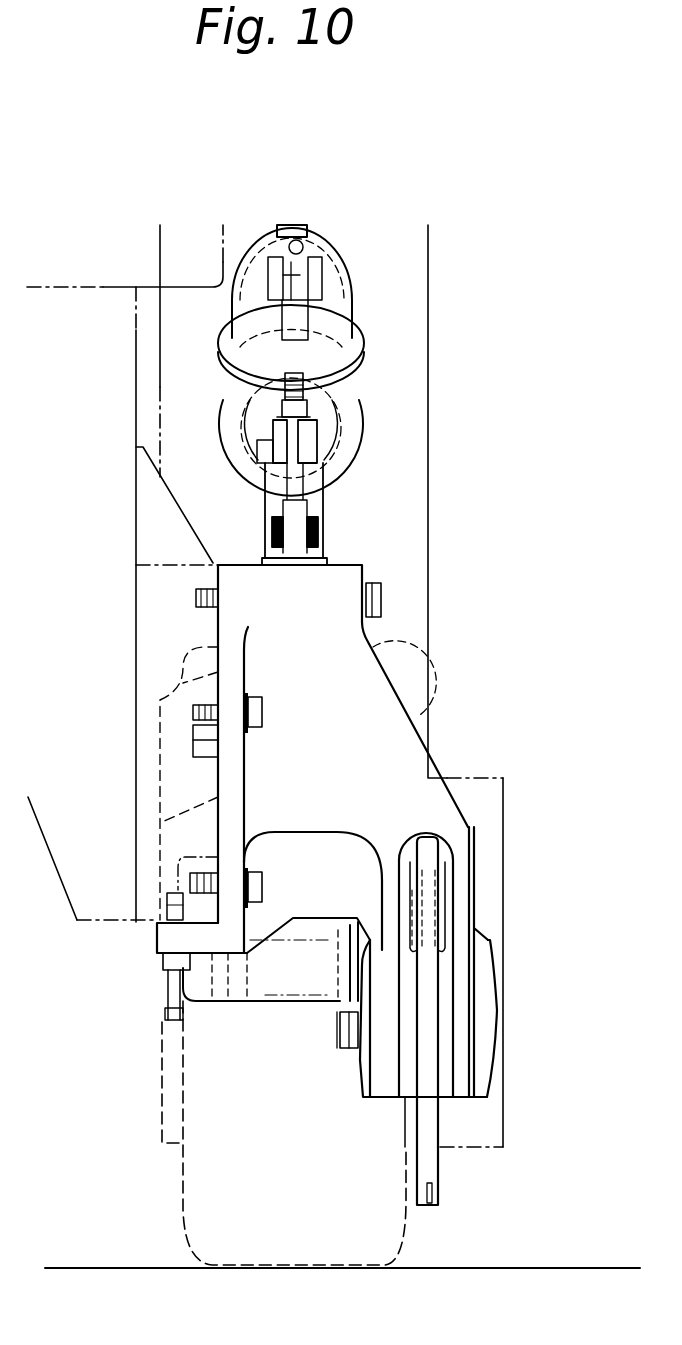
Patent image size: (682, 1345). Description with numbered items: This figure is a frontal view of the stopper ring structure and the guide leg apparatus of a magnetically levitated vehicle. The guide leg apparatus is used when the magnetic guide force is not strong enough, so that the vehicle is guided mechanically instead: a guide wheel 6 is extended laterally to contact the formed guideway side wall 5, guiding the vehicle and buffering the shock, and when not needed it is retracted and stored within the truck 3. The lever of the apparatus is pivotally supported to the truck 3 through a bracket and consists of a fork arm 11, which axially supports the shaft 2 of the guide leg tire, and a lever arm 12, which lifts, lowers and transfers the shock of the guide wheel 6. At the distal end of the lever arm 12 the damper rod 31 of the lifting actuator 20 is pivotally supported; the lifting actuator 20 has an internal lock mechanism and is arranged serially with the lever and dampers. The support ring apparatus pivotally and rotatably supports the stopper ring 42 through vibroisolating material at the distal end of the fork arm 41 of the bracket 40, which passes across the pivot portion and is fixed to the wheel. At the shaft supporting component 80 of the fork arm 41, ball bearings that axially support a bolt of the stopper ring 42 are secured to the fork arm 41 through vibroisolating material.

The shaft 2 is at (284, 983).
The truck 3 is at (136, 590).
The guideway side wall 5 is at (568, 1268).
The guide wheel 6 is at (193, 1190).
The fork arm 11 is at (170, 770).
The lever arm 12 is at (317, 493).
The lifting actuator 20 is at (343, 298).
The damper rod 31 is at (343, 427).
The bracket 40 is at (352, 697).
The fork arm 41 is at (482, 856).
The stopper ring 42 is at (438, 1185).
The shaft supporting component 80 is at (508, 1006).